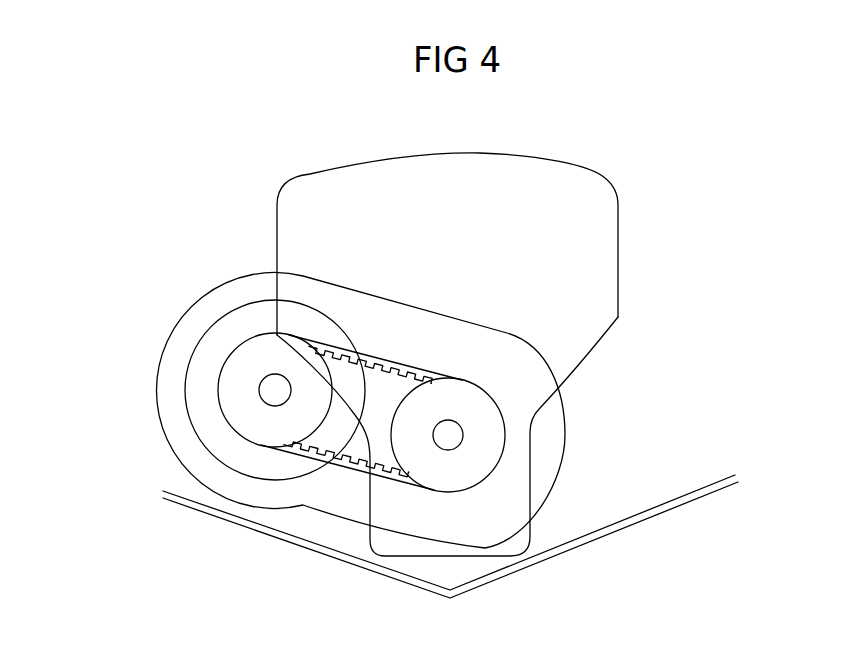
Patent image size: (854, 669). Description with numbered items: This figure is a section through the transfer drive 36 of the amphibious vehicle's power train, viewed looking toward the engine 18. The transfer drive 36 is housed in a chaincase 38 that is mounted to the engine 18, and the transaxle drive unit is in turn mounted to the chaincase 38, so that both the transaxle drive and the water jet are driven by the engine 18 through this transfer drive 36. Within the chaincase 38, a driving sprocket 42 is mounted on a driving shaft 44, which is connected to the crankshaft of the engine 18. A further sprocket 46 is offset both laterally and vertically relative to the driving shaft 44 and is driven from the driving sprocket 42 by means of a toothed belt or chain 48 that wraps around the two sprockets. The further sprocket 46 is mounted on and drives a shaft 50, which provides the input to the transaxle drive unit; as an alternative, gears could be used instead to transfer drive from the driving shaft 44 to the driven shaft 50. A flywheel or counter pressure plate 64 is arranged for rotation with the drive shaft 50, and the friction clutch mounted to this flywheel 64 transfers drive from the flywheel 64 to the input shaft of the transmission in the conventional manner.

The engine 18 is at (437, 231).
The transfer drive 36 is at (206, 270).
The chaincase 38 is at (185, 328).
The driving sprocket 42 is at (480, 408).
The driving shaft 44 is at (450, 436).
The further sprocket 46 is at (250, 425).
The toothed belt or chain 48 is at (395, 362).
The shaft 50 is at (275, 388).
The flywheel or counter pressure plate 64 is at (277, 477).